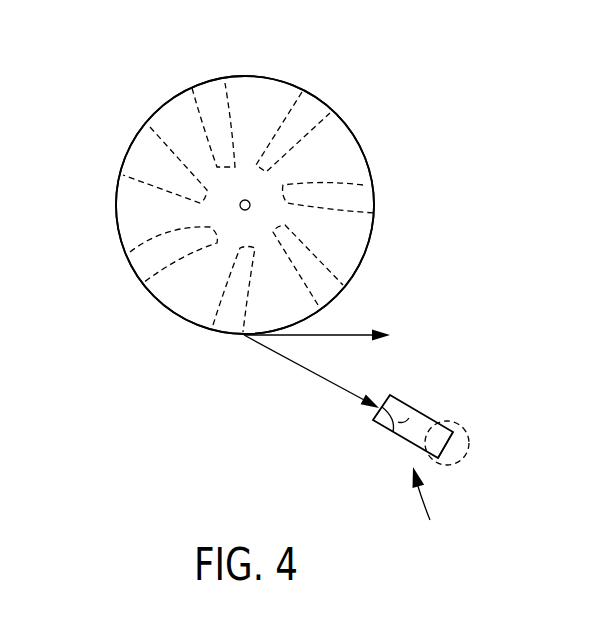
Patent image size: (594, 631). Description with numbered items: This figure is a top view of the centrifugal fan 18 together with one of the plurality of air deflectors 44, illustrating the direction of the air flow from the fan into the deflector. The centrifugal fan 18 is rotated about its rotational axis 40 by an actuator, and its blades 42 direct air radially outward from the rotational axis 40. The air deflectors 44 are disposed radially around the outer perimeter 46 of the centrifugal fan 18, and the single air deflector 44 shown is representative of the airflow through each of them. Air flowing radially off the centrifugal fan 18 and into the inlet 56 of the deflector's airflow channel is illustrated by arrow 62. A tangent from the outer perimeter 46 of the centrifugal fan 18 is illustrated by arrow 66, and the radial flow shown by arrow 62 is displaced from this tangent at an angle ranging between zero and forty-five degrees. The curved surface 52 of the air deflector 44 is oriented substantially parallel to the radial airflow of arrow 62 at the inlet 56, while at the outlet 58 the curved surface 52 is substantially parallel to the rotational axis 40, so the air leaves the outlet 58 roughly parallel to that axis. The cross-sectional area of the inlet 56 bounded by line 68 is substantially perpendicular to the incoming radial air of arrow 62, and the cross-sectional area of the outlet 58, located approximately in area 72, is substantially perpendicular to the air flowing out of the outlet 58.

The centrifugal fan 18 is at (163, 97).
The rotational axis 40 is at (245, 200).
The blades 42 is at (150, 126).
The air deflector 44 is at (426, 511).
The outer perimeter 46 is at (117, 199).
The curved surface 52 is at (412, 410).
The inlet 56 is at (409, 418).
The outlet 58 is at (438, 462).
The arrow 62 is at (287, 362).
The arrow 66 is at (353, 335).
The line 68 is at (391, 432).
The area 72 is at (470, 447).